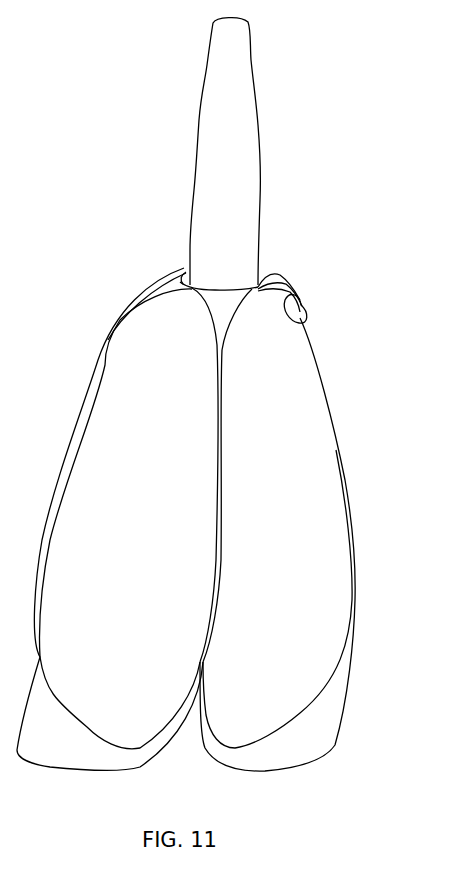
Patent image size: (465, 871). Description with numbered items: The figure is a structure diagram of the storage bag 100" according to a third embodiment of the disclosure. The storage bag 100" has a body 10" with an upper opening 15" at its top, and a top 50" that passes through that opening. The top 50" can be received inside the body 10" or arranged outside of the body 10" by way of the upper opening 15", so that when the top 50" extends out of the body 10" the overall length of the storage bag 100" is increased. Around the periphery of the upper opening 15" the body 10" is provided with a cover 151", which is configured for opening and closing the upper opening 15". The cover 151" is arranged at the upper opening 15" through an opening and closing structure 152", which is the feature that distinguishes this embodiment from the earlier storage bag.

The storage bag 100 is at (197, 395).
The top 50 is at (235, 208).
The upper opening 15 is at (263, 277).
The cover 151 is at (277, 272).
The opening and closing structure 152 is at (290, 285).
The body 10 is at (125, 523).